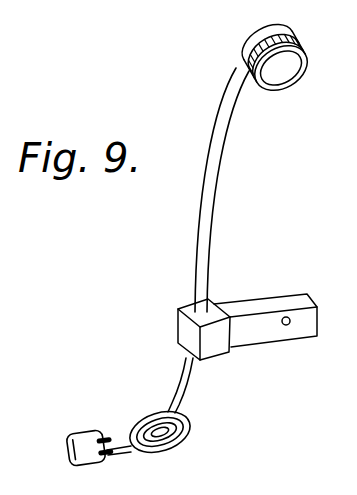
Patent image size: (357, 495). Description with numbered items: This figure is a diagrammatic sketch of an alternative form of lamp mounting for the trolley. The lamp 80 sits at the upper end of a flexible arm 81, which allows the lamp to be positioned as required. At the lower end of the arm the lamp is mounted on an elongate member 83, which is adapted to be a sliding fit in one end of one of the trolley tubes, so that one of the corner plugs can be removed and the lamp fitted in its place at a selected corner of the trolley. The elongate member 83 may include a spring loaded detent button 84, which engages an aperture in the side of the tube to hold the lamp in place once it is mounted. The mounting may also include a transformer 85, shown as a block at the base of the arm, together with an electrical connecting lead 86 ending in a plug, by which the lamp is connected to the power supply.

The lamp 80 is at (240, 38).
The flexible arm 81 is at (196, 236).
The elongate member 83 is at (268, 299).
The spring loaded detent button 84 is at (287, 325).
The transformer 85 is at (178, 331).
The electrical connecting lead 86 is at (181, 395).